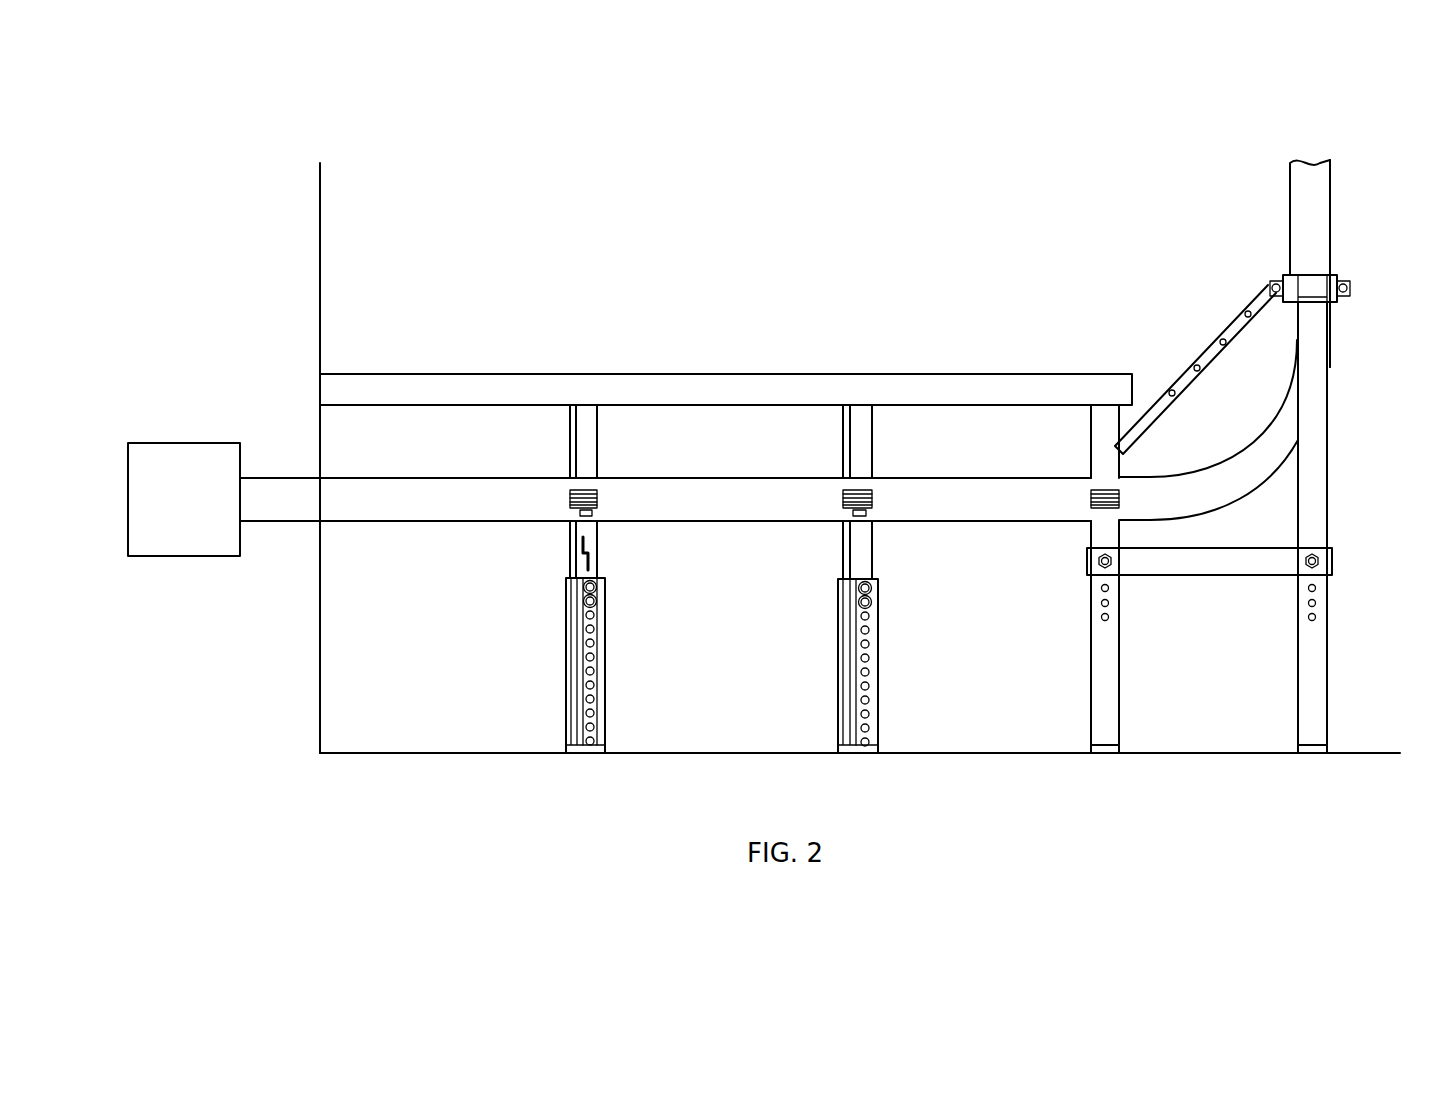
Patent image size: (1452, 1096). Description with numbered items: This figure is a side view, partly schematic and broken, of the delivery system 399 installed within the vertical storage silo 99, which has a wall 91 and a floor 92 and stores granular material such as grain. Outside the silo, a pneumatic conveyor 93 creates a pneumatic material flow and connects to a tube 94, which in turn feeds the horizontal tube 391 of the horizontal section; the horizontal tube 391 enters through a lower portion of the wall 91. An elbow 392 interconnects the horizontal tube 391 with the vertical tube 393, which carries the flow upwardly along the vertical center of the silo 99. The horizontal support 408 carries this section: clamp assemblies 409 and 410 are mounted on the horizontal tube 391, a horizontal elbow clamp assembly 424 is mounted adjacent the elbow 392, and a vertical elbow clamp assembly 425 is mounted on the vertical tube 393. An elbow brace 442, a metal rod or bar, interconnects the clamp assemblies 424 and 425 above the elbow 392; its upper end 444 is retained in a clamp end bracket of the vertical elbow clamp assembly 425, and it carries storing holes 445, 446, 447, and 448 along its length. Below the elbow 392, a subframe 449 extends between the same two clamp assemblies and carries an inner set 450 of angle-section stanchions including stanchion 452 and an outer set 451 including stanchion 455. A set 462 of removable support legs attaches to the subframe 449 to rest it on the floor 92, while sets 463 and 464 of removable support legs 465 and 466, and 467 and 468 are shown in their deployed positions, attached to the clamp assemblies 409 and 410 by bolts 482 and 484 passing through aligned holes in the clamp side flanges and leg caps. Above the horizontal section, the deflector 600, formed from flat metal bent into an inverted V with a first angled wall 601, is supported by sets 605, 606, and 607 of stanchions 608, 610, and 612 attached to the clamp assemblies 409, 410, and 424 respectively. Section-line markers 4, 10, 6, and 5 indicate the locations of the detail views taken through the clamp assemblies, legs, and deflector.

The vertical storage silo 99 is at (262, 190).
The wall 91 is at (320, 250).
The floor 92 is at (373, 753).
The pneumatic conveyor 93 is at (153, 410).
The tube 94 is at (293, 477).
The horizontal tube 391 is at (410, 521).
The deflector 600 is at (726, 301).
The first angled wall 601 is at (775, 374).
The set of stanchions 605 is at (624, 427).
The set of stanchions 606 is at (818, 427).
The set of stanchions 607 is at (1067, 418).
The stanchion 608 is at (585, 579).
The stanchion 610 is at (860, 579).
The stanchion 612 is at (1057, 521).
The horizontal elbow clamp assembly 424 is at (1083, 475).
The bolt 482 is at (581, 514).
The bolt 484 is at (856, 512).
The clamp assembly 409 is at (624, 540).
The clamp assembly 410 is at (898, 540).
The inner set of stanchions 450 is at (1070, 537).
The stanchion 452 is at (1122, 542).
The stanchion 455 is at (1330, 468).
The outer set of stanchions 451 is at (1347, 485).
The subframe 449 is at (1342, 536).
The set of removable support legs 462 is at (1349, 689).
The set of removable support legs 463 is at (628, 633).
The set of removable support legs 464 is at (900, 665).
The removable support leg 465 is at (640, 665).
The removable support leg 466 is at (566, 710).
The removable support leg 467 is at (913, 666).
The removable support leg 468 is at (838, 712).
The horizontal support 408 is at (1065, 783).
The delivery system 399 is at (1185, 404).
The upper end 444 is at (1258, 285).
The storing hole 448 is at (1250, 305).
The storing hole 445 is at (1177, 373).
The storing hole 446 is at (1196, 362).
The storing hole 447 is at (1226, 345).
The elbow brace 442 is at (1167, 313).
The vertical tube 393 is at (1360, 267).
The vertical elbow clamp assembly 425 is at (1360, 288).
The elbow 392 is at (1331, 357).
The section line 4 is at (582, 353).
The section line 10 is at (560, 416).
The section line 6 is at (565, 430).
The section line 5 is at (557, 578).